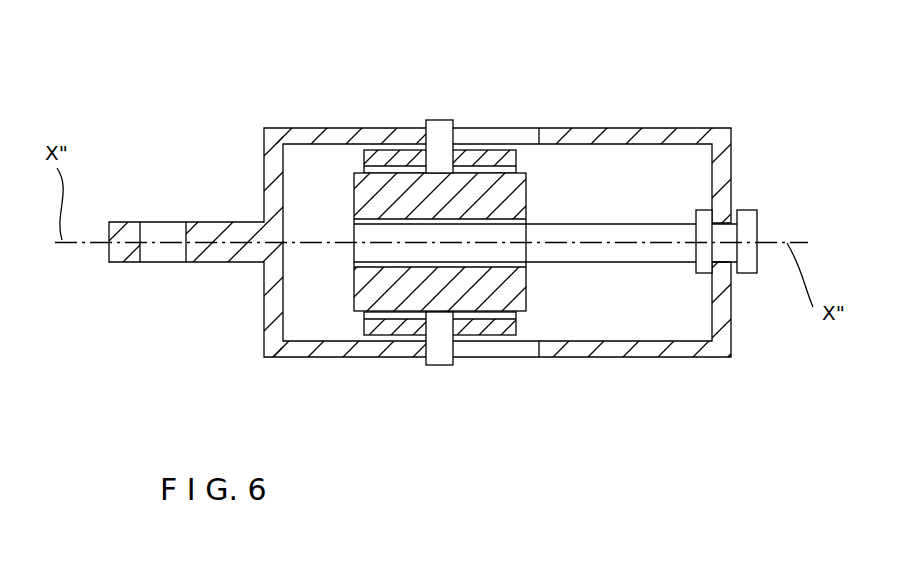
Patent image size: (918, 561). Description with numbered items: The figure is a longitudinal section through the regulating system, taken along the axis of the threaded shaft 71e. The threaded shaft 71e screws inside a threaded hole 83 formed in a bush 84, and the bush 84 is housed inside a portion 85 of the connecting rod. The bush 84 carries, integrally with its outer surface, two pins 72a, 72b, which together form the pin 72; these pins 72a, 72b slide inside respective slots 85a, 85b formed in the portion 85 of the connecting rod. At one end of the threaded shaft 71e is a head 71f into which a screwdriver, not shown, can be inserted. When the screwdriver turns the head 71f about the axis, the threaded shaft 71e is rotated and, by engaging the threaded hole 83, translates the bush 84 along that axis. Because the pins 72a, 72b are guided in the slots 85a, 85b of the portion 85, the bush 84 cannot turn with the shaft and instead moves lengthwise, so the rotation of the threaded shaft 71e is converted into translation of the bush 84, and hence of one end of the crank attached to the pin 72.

The portion of connecting rod 85 is at (678, 345).
The slot 85a is at (515, 347).
The slot 85b is at (485, 158).
The bush 84 is at (527, 200).
The threaded hole 83 is at (416, 261).
The pin 72 is at (439, 264).
The pin 72a is at (443, 367).
The pin 72b is at (442, 127).
The threaded shaft 71e is at (662, 232).
The head 71f is at (750, 262).